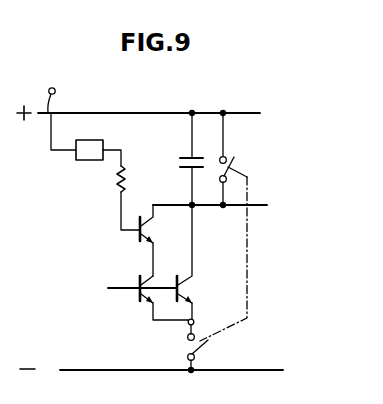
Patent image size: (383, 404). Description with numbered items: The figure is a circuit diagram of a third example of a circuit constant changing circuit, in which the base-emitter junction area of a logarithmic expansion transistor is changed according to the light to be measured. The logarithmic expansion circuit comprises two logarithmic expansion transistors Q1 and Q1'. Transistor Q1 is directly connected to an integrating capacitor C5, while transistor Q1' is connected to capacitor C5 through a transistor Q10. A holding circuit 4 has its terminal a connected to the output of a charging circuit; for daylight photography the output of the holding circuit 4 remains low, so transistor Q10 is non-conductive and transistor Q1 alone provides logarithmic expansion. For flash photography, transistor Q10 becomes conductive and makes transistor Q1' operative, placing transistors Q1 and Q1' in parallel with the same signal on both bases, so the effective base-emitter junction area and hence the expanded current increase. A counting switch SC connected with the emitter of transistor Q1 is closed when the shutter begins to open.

The holding circuit 4 is at (73, 158).
The terminal a is at (60, 93).
The integrating capacitor C5 is at (182, 160).
The transistor Q10 is at (138, 238).
The logarithmic expansion transistor Q1 is at (202, 254).
The logarithmic expansion transistor Q1' is at (137, 301).
The counting switch SC is at (195, 348).